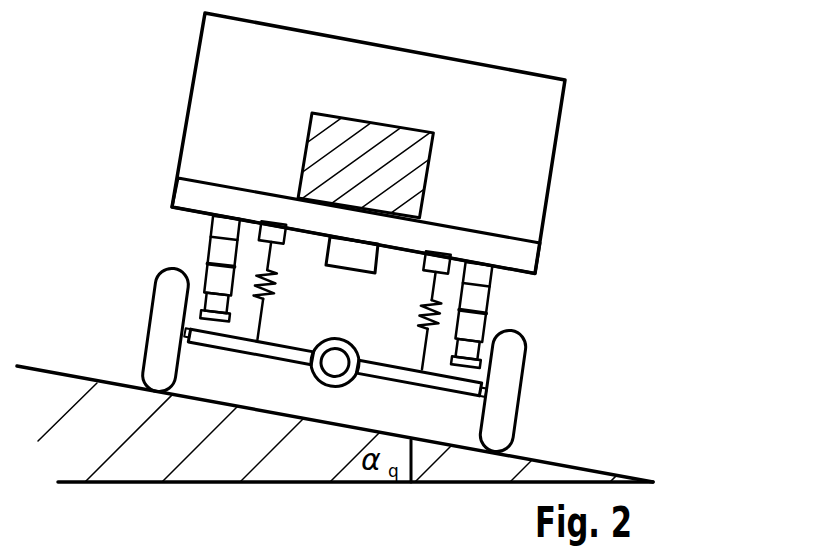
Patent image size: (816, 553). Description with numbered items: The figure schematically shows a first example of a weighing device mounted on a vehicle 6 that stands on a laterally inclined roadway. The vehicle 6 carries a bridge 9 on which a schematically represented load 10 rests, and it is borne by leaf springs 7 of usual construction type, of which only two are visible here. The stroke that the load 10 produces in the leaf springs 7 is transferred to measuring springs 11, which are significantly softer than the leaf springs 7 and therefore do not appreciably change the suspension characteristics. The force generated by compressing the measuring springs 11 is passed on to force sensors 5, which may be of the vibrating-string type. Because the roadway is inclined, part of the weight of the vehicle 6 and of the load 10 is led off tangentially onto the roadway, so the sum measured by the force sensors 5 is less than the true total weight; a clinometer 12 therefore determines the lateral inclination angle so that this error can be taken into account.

The force sensor 5 is at (290, 226).
The vehicle 6 is at (558, 140).
The leaf spring 7 is at (221, 278).
The bridge 9 is at (537, 257).
The load 10 is at (390, 142).
The measuring spring 11 is at (262, 285).
The clinometer 12 is at (345, 250).